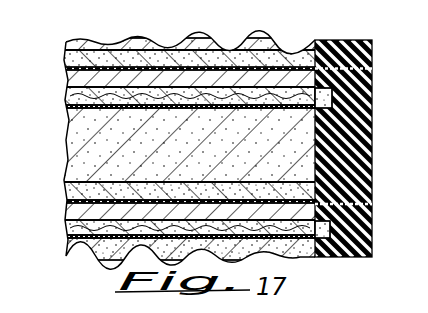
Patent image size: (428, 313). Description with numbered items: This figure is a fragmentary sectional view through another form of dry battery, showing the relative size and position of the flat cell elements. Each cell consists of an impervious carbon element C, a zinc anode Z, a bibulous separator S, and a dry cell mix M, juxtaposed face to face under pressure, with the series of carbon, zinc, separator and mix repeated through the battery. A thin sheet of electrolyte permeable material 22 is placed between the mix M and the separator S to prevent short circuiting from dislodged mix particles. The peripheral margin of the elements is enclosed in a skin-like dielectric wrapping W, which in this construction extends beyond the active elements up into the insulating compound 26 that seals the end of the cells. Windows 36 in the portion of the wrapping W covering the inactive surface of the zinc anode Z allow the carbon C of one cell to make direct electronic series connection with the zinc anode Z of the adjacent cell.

The carbon element C is at (64, 54).
The zinc anode Z is at (66, 80).
The separator S is at (64, 103).
The electrolyte permeable material 22 is at (72, 135).
The mix M is at (77, 158).
The windows 36 is at (234, 70).
The insulating compound 26 is at (371, 116).
The peripheral wrapping W is at (369, 206).